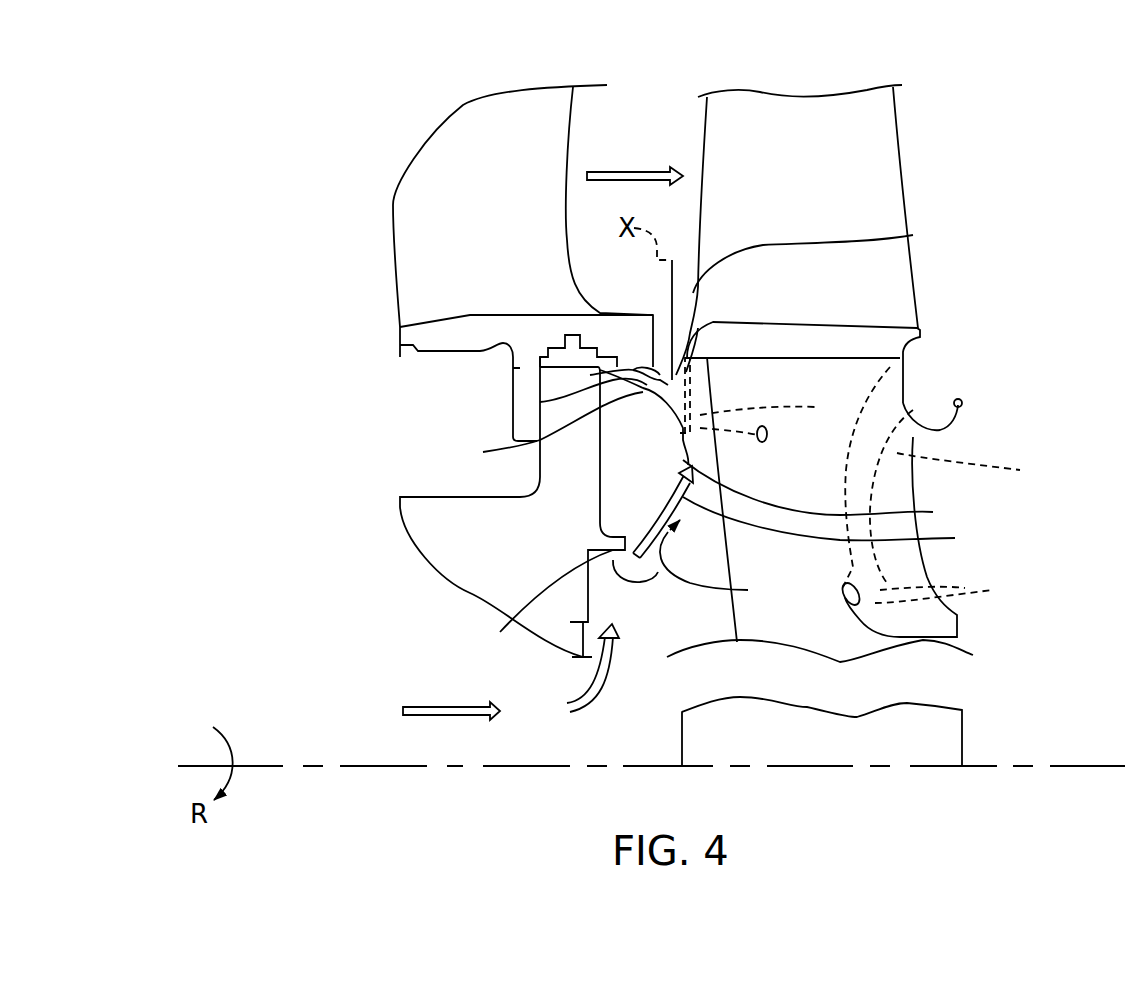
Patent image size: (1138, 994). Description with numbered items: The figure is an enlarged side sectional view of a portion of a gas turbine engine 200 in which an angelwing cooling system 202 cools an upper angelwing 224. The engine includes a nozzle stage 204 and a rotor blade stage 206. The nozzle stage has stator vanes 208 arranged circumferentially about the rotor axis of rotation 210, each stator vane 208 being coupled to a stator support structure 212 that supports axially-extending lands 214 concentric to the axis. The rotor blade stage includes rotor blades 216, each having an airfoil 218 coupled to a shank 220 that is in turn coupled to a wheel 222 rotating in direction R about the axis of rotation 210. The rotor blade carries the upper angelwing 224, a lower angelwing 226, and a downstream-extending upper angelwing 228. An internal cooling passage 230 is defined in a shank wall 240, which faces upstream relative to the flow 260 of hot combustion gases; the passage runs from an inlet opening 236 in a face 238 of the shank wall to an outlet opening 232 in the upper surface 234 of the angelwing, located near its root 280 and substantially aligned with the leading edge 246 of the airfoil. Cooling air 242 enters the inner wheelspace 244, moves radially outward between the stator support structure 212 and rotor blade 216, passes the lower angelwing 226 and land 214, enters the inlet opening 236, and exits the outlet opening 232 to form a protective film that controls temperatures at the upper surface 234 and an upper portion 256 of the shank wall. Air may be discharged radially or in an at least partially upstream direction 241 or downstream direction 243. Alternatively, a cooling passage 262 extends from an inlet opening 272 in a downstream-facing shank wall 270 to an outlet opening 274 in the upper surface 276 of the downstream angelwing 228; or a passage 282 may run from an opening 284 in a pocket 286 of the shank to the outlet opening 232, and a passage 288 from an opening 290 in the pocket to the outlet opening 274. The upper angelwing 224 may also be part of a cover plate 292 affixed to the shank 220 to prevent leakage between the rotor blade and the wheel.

The gas turbine engine 200 is at (303, 98).
The angelwing cooling system 202 is at (720, 447).
The nozzle stage 204 is at (393, 320).
The rotor blade stage 206 is at (927, 270).
The stator vane 208 is at (507, 222).
The rotor axis of rotation 210 is at (350, 763).
The stator support structure 212 is at (521, 548).
The axially-extending land 214 is at (544, 606).
The rotor blade 216 is at (913, 177).
The airfoil 218 is at (826, 220).
The shank 220 is at (831, 448).
The wheel 222 is at (847, 755).
The upper angelwing 224 is at (646, 397).
The lower angelwing 226 is at (641, 583).
The downstream-extending upper angelwing 228 is at (962, 407).
The internal cooling passage 230 is at (830, 494).
The outlet opening 232 is at (913, 235).
The upper surface of angelwing 234 is at (666, 378).
The inlet opening 236 is at (842, 525).
The face of shank wall 238 is at (727, 564).
The shank wall 240 is at (712, 537).
The at least partially upstream direction 241 is at (513, 368).
The cooling air 242 is at (655, 500).
The at least partially downstream direction 243 is at (922, 434).
The inner wheelspace 244 is at (447, 665).
The leading edge 246 is at (697, 215).
The upper portion of shank wall 256 is at (700, 382).
The flow of hot combustion gases 260 is at (630, 168).
The alternative cooling passage 262 is at (984, 469).
The downstream-facing shank wall 270 is at (930, 627).
The inlet opening of alternative passage 272 is at (930, 573).
The outlet opening of alternative passage 274 is at (912, 397).
The upper surface of downstream angelwing 276 is at (917, 362).
The root of angelwing 280 is at (717, 403).
The pocket passage 282 is at (782, 409).
The pocket opening 284 is at (767, 440).
The pocket of shank 286 is at (845, 645).
The downstream pocket passage 288 is at (957, 593).
The downstream pocket opening 290 is at (973, 655).
The cover plate 292 is at (540, 402).